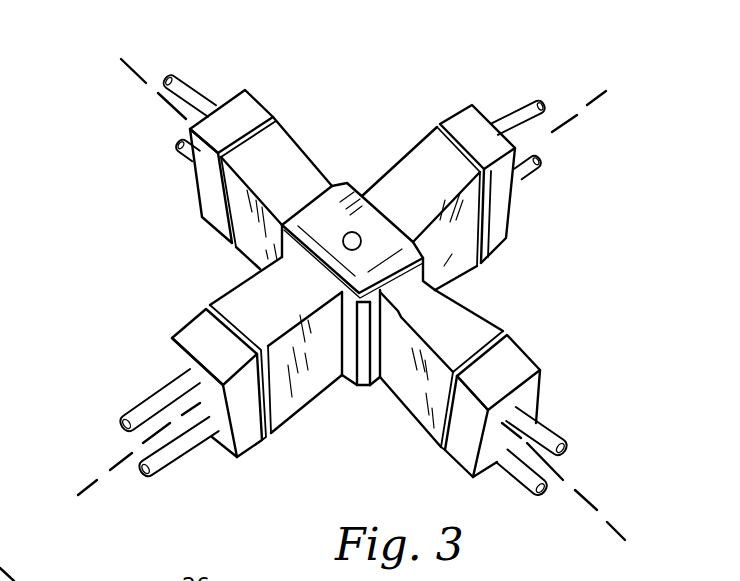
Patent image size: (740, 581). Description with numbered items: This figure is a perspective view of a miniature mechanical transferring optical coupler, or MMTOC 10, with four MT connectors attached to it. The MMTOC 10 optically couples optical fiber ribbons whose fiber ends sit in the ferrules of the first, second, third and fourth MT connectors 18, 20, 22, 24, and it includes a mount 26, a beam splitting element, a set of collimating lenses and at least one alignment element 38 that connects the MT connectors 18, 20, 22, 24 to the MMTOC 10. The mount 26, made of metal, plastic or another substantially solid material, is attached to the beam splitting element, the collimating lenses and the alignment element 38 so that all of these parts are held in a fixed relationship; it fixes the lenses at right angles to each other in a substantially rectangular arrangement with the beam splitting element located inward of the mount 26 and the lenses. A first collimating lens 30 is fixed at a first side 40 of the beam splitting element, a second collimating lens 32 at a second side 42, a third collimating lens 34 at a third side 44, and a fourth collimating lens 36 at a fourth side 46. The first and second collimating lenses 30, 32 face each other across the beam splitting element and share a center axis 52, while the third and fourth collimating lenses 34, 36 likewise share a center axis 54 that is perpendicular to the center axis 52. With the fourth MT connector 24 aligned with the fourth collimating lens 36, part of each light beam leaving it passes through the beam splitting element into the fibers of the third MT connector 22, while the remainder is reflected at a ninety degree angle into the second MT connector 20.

The miniature mechanical transferring optical coupler 10 is at (368, 114).
The first MT connector 18 is at (243, 440).
The second MT connector 20 is at (503, 213).
The third MT connector 22 is at (247, 107).
The fourth MT connector 24 is at (519, 360).
The mount 26 is at (420, 248).
The first collimating lens 30 is at (343, 376).
The second collimating lens 32 is at (346, 185).
The third collimating lens 34 is at (278, 243).
The fourth collimating lens 36 is at (378, 380).
The alignment element 38 is at (177, 152).
The first side of the beam splitting element 40 is at (336, 289).
The second side of the beam splitting element 42 is at (380, 210).
The third side of the beam splitting element 44 is at (313, 204).
The fourth side of the beam splitting element 46 is at (399, 276).
The center axis 52 is at (96, 482).
The center axis 54 is at (140, 68).